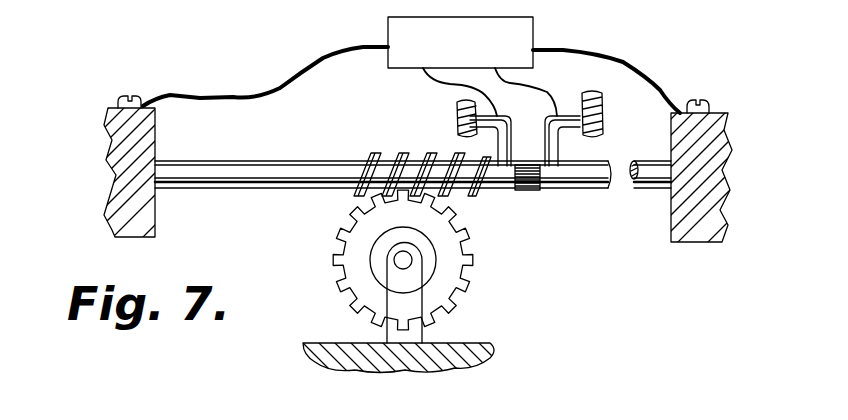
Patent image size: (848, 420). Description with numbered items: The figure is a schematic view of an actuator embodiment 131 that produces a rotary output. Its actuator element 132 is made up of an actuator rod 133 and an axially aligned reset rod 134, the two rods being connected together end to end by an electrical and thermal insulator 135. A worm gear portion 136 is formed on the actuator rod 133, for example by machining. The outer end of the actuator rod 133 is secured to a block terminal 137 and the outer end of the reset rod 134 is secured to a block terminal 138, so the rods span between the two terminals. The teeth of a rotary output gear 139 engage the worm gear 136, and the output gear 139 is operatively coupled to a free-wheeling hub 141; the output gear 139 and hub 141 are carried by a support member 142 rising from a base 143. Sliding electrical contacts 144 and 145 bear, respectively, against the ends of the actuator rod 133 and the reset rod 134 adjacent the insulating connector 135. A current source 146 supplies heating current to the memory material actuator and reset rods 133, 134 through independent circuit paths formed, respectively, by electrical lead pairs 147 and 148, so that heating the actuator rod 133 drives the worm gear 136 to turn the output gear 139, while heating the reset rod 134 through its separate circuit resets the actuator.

The actuator embodiment 131 is at (207, 67).
The actuator element 132 is at (242, 222).
The actuator rod 133 is at (252, 160).
The reset rod 134 is at (660, 197).
The electrical and thermal insulator 135 is at (525, 195).
The worm gear portion 136 is at (342, 196).
The block terminal 137 is at (103, 118).
The block terminal 138 is at (728, 113).
The rotary output gear 139 is at (338, 278).
The free-wheeling hub 141 is at (386, 237).
The support member 142 is at (423, 335).
The base 143 is at (492, 343).
The sliding electrical contact 144 is at (496, 136).
The sliding electrical contact 145 is at (560, 138).
The current source 146 is at (540, 35).
The electrical lead pair 147 is at (427, 72).
The electrical lead pair 148 is at (620, 66).